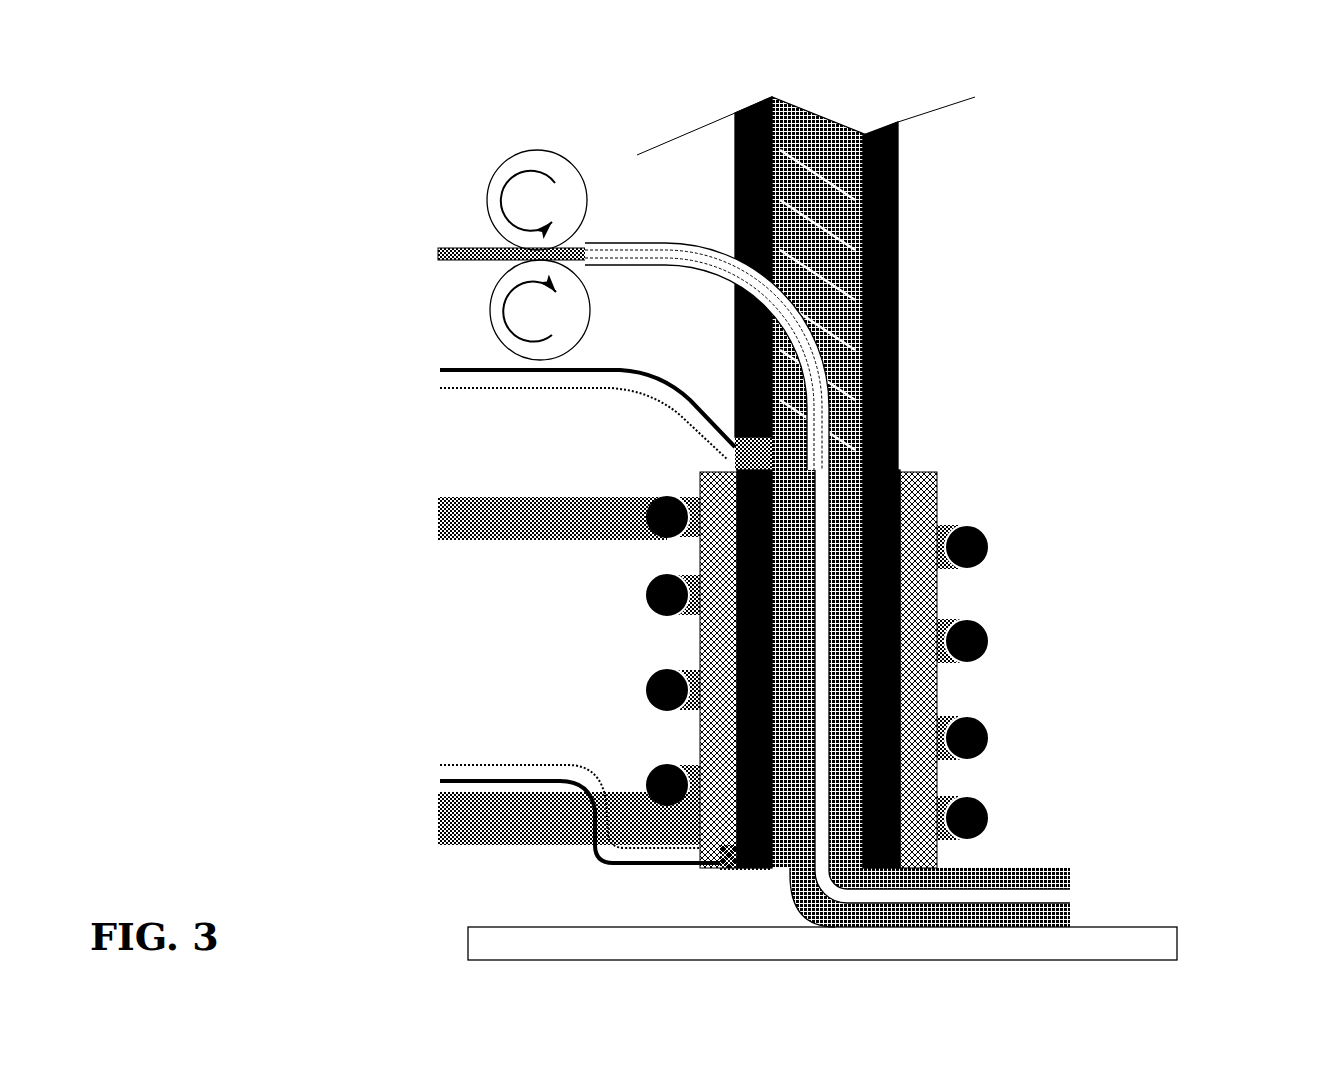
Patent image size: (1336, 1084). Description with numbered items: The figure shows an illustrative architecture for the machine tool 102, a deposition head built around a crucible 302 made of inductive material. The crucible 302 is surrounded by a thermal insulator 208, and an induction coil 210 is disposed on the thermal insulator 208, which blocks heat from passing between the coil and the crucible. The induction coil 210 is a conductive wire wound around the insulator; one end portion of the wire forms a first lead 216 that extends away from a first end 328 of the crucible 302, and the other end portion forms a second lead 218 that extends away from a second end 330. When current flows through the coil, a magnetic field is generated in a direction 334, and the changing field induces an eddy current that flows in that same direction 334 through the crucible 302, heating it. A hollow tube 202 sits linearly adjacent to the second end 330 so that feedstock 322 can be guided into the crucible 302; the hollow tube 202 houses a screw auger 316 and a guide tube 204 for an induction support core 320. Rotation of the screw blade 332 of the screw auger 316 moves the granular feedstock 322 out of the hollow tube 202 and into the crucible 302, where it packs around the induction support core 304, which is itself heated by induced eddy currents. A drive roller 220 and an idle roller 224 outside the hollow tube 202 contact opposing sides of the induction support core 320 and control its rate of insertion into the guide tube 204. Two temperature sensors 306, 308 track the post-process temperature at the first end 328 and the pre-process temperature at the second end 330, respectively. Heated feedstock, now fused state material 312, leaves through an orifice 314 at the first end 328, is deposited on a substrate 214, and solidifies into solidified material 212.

The machine tool 102 is at (1122, 110).
The hollow tube 202 is at (898, 266).
The guide tube 204 is at (792, 392).
The thermal insulator 208 is at (922, 589).
The induction coil 210 is at (977, 733).
The solidified material 212 is at (1037, 880).
The substrate 214 is at (1130, 945).
The first lead 216 is at (442, 818).
The second lead 218 is at (452, 508).
The drive roller 220 is at (498, 312).
The idle roller 224 is at (494, 172).
The crucible 302 is at (880, 489).
The induction support core 304 is at (832, 690).
The temperature sensor 306 is at (737, 848).
The temperature sensor 308 is at (754, 457).
The fused state material 312 is at (842, 547).
The orifice 314 is at (847, 837).
The screw auger 316 is at (766, 149).
The induction support core 320 is at (480, 247).
The feedstock 322 is at (844, 345).
The first end 328 is at (677, 873).
The second end 330 is at (924, 447).
The screw blade 332 is at (840, 214).
The direction 334 is at (604, 740).